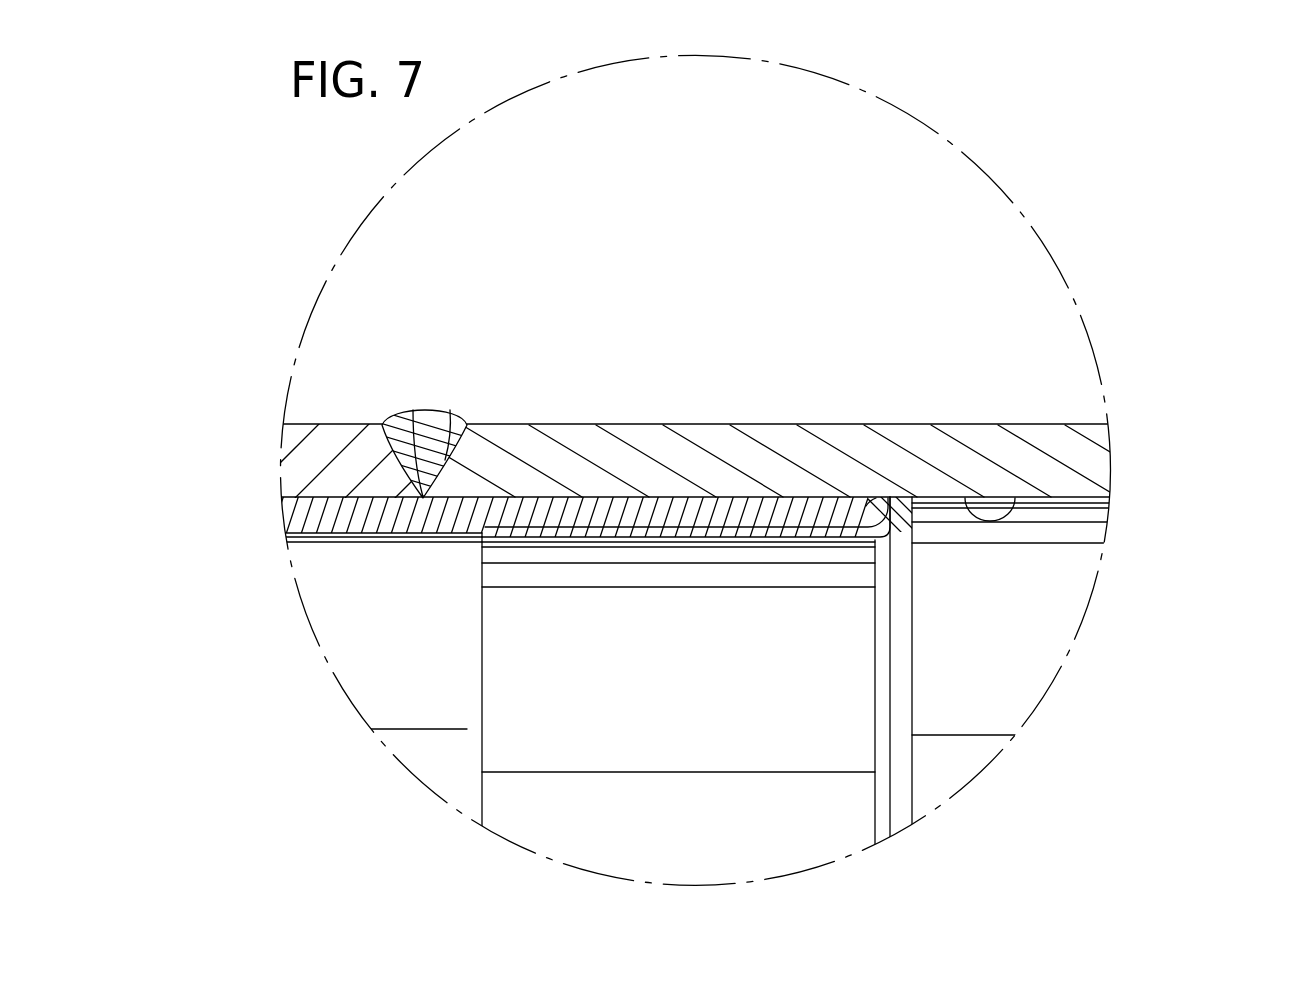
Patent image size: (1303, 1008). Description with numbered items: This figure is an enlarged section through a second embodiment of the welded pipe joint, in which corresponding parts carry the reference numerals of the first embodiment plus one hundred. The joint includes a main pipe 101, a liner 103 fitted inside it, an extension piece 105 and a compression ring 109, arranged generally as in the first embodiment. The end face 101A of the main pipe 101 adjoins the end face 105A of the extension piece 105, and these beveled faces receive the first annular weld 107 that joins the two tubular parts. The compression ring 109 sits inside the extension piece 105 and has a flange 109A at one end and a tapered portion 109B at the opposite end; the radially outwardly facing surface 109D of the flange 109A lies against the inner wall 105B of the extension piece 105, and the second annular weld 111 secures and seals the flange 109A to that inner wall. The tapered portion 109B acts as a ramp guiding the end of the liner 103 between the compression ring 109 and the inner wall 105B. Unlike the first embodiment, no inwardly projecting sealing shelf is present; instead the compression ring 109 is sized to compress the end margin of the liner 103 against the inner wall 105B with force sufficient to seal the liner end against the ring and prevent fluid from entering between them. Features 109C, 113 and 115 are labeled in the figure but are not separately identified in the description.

The main pipe 101 is at (314, 408).
The end face of main pipe 101A is at (413, 410).
The liner 103 is at (343, 533).
The extension piece 105 is at (1061, 406).
The end face of extension piece 105A is at (450, 410).
The inner wall of extension piece 105B is at (1015, 498).
The first annular weld 107 is at (432, 408).
The compression ring 109 is at (897, 529).
The flange of compression ring 109A is at (866, 506).
The tapered portion of compression ring 109B is at (480, 532).
The upper surface of bracket 109C is at (738, 497).
The radially outwardly facing surface of flange 109D is at (908, 497).
The second annular weld 111 is at (902, 628).
The first layer 113 is at (640, 500).
The second layer 115 is at (703, 540).